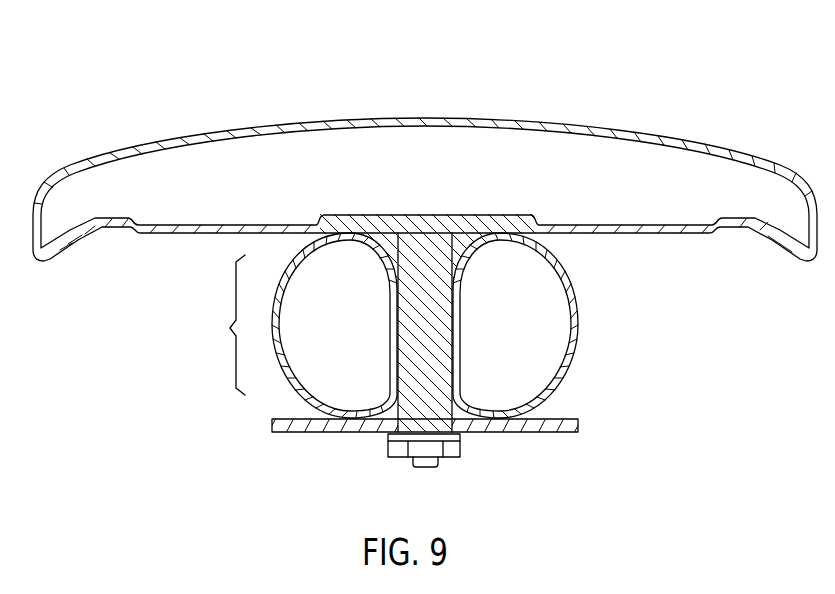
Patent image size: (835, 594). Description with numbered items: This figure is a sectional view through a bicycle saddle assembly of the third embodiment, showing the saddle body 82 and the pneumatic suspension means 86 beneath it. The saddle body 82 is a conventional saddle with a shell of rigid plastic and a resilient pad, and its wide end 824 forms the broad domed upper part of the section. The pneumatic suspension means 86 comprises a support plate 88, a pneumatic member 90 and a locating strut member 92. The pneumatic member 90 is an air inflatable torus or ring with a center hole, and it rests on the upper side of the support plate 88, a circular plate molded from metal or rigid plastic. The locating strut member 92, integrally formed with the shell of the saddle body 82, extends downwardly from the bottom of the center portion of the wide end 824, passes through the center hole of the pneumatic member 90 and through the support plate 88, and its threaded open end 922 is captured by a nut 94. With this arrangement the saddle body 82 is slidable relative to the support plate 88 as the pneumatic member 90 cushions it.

The saddle body 82 is at (425, 147).
The wide end 824 is at (525, 118).
The pneumatic suspension means 86 is at (465, 325).
The pneumatic member 90 is at (592, 313).
The locating strut member 92 is at (437, 356).
The support plate 88 is at (580, 425).
The nut 94 is at (380, 454).
The threaded open end 922 is at (430, 464).